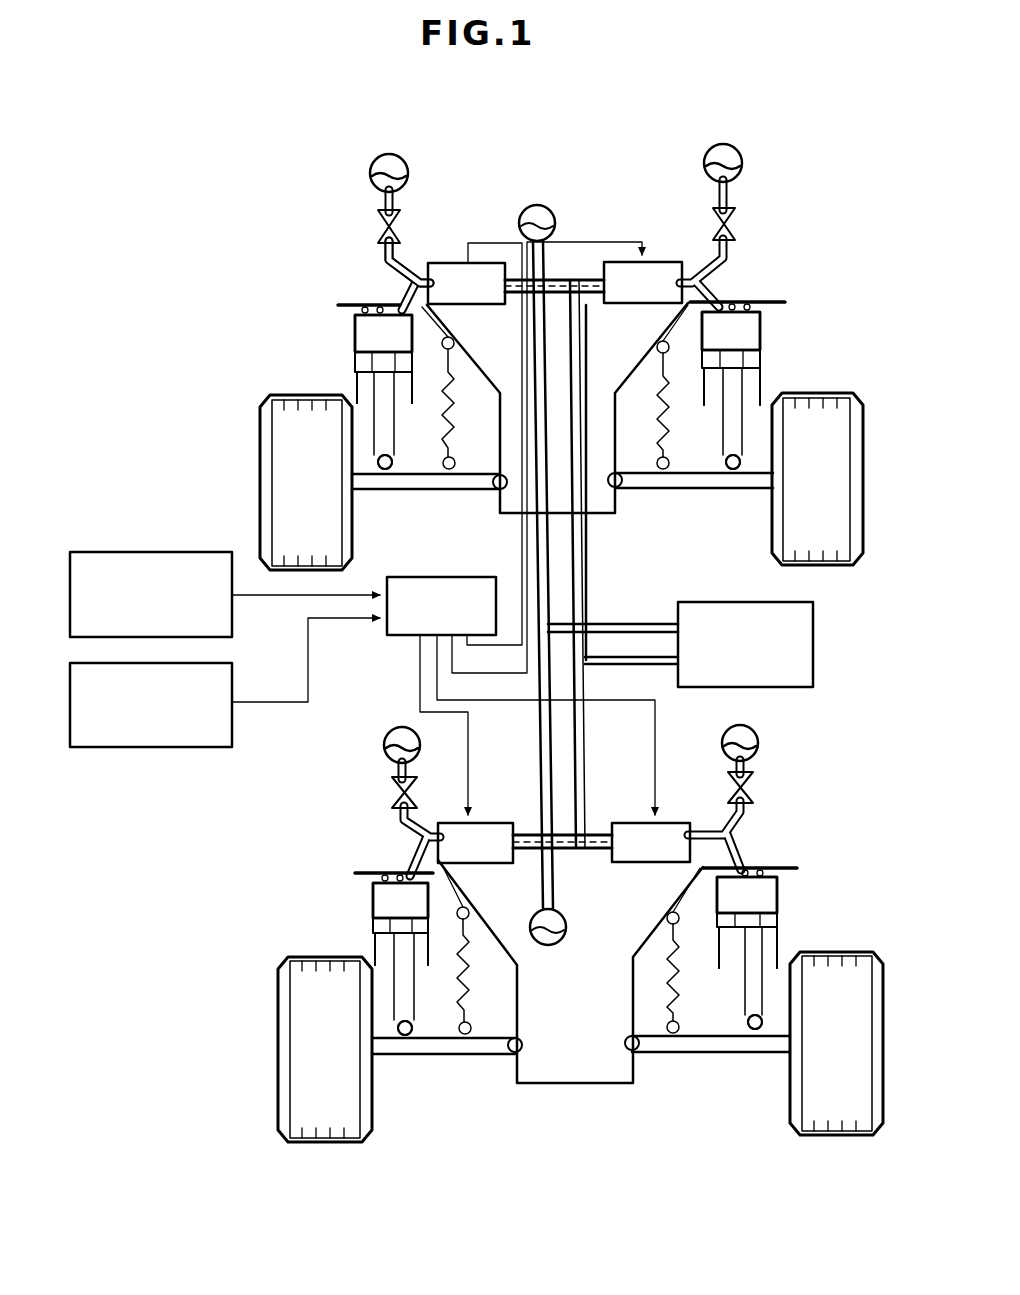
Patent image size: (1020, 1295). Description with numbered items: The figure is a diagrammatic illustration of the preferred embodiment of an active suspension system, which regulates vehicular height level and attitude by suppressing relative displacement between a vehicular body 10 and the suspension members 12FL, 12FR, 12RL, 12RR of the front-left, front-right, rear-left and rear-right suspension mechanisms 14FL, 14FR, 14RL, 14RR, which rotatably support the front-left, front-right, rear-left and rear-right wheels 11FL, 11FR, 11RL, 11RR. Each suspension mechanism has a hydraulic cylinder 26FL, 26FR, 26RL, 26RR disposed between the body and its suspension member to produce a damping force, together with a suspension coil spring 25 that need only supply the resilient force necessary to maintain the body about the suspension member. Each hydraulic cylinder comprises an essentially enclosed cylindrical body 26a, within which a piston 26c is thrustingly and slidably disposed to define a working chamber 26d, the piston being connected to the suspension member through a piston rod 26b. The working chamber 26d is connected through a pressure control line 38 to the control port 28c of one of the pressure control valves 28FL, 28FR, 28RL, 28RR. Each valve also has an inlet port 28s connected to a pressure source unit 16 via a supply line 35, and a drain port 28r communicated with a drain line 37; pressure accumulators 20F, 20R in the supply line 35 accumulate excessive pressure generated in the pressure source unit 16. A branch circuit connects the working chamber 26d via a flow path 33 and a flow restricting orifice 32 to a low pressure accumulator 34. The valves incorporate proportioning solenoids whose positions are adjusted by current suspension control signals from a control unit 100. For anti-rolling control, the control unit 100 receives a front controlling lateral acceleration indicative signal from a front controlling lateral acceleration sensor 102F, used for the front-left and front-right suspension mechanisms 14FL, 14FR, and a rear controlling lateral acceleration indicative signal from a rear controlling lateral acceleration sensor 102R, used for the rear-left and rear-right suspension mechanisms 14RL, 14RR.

The vehicular body 10 is at (605, 514).
The front-left wheel 11FL is at (280, 455).
The front-right wheel 11FR is at (833, 475).
The rear-left wheel 11RL is at (298, 1045).
The rear-right wheel 11RR is at (802, 1130).
The front-left suspension member 12FL is at (447, 490).
The front-right suspension member 12FR is at (665, 490).
The rear-left suspension member 12RL is at (468, 1055).
The rear-right suspension member 12RR is at (672, 1053).
The front-left suspension mechanism 14FL is at (287, 370).
The front-right suspension mechanism 14FR is at (786, 368).
The rear-left suspension mechanism 14RL is at (306, 943).
The rear-right suspension mechanism 14RR is at (800, 931).
The pressure source unit 16 is at (813, 612).
The pressure accumulator 20F is at (539, 205).
The pressure accumulator 20R is at (553, 946).
The suspension coil spring 25 is at (450, 410).
The cylindrical body 26a is at (366, 306).
The piston rod 26b is at (380, 470).
The piston 26c is at (362, 380).
The working chamber 26d is at (368, 340).
The front-left hydraulic cylinder 26FL is at (343, 318).
The front-right hydraulic cylinder 26FR is at (778, 318).
The rear-left hydraulic cylinder 26RL is at (360, 895).
The rear-right hydraulic cylinder 26RR is at (780, 872).
The front-left pressure control valve 28FL is at (447, 262).
The front-right pressure control valve 28FR is at (645, 262).
The rear-left pressure control valve 28RL is at (490, 820).
The rear-right pressure control valve 28RR is at (630, 820).
The control port 28c is at (421, 281).
The inlet port 28s is at (511, 247).
The drain port 28r is at (511, 307).
The orifice 32 is at (378, 226).
The flow path 33 is at (385, 258).
The pressure accumulator 34 is at (389, 153).
The supply line 35 is at (645, 623).
The drain line 37 is at (645, 665).
The pressure control line 38 is at (559, 609).
The control unit 100 is at (385, 636).
The front controlling lateral acceleration sensor 102F is at (152, 552).
The rear controlling lateral acceleration sensor 102R is at (170, 747).